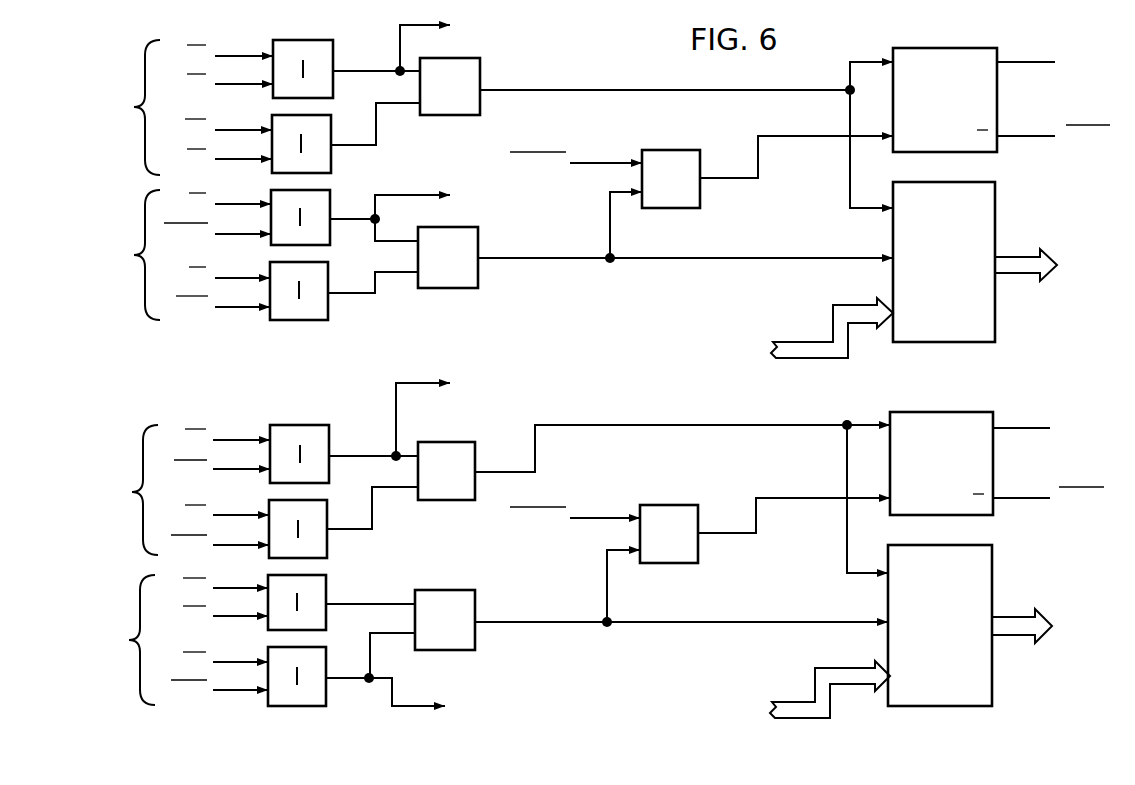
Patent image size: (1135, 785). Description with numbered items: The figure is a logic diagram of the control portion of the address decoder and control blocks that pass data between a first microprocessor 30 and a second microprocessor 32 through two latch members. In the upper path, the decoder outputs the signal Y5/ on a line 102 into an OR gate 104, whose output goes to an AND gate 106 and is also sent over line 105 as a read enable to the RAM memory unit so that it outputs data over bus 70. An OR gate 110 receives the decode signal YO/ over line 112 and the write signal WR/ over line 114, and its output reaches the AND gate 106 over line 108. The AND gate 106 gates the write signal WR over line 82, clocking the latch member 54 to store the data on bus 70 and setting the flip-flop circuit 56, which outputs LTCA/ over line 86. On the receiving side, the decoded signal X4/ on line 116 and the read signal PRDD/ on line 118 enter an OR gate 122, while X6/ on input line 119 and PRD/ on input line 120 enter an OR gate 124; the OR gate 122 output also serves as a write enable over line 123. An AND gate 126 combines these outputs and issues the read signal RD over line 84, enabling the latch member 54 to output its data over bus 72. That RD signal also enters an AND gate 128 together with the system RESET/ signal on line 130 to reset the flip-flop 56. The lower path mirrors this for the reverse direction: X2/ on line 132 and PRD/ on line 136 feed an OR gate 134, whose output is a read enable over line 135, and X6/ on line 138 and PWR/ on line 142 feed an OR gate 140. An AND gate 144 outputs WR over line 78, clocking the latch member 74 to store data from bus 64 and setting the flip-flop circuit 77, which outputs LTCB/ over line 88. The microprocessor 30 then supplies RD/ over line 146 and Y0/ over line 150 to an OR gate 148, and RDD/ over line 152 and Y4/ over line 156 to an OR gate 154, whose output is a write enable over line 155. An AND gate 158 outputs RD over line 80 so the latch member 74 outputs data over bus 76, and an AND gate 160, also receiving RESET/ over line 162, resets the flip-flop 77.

The microprocessor 30 is at (95, 372).
The microprocessor 32 is at (95, 372).
The Y5 input line 102 is at (250, 42).
The line 105 is at (250, 71).
The OR gate 104 is at (318, 54).
The AND gate 106 is at (470, 72).
The line 108 is at (376, 128).
The OR gate 110 is at (318, 160).
The line 112 is at (250, 145).
The line 114 is at (250, 117).
The line 116 is at (249, 190).
The line 118 is at (249, 220).
The input line 119 is at (249, 264).
The input line 120 is at (230, 307).
The OR gate 122 is at (318, 205).
The line 123 is at (414, 196).
The OR gate 124 is at (313, 312).
The AND gate 126 is at (460, 288).
The AND gate 128 is at (680, 208).
The line 130 is at (597, 163).
The line 82 is at (746, 96).
The line 84 is at (758, 150).
The flip-flop circuit 56 is at (995, 152).
The line 86 is at (1028, 62).
The latch member 54 is at (983, 215).
The bus 70 is at (797, 345).
The bus 72 is at (1018, 271).
The line 132 is at (229, 440).
The OR gate 134 is at (315, 440).
The line 135 is at (414, 384).
The line 136 is at (243, 457).
The line 138 is at (243, 503).
The OR gate 140 is at (316, 545).
The line 142 is at (243, 533).
The AND gate 144 is at (445, 452).
The line 146 is at (243, 576).
The OR gate 148 is at (314, 588).
The line 150 is at (243, 604).
The line 152 is at (230, 690).
The OR gate 154 is at (316, 695).
The line 155 is at (418, 706).
The line 156 is at (243, 650).
The AND gate 158 is at (447, 640).
The AND gate 160 is at (690, 545).
The line 162 is at (583, 518).
The flip-flop circuit 77 is at (938, 412).
The line 78 is at (679, 425).
The line 80 is at (805, 500).
The line 88 is at (1020, 428).
The latch member 74 is at (983, 578).
The bus 64 is at (785, 702).
The bus 76 is at (1017, 632).